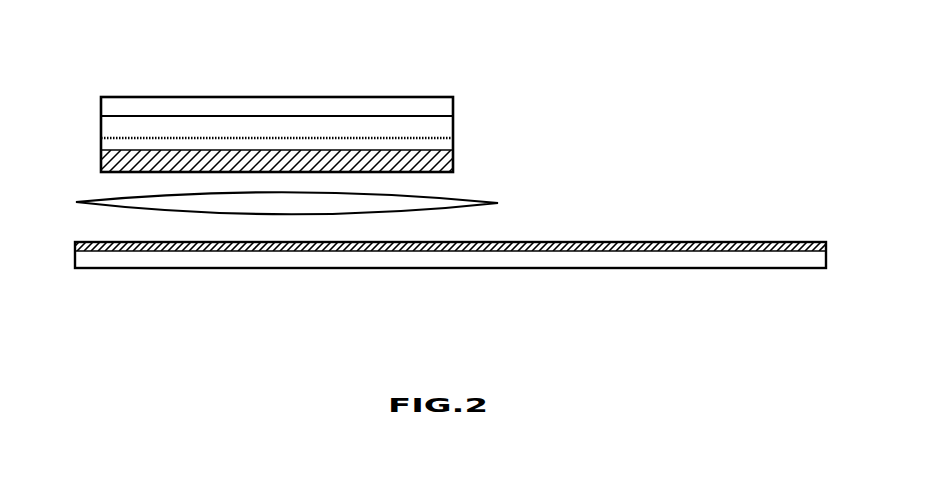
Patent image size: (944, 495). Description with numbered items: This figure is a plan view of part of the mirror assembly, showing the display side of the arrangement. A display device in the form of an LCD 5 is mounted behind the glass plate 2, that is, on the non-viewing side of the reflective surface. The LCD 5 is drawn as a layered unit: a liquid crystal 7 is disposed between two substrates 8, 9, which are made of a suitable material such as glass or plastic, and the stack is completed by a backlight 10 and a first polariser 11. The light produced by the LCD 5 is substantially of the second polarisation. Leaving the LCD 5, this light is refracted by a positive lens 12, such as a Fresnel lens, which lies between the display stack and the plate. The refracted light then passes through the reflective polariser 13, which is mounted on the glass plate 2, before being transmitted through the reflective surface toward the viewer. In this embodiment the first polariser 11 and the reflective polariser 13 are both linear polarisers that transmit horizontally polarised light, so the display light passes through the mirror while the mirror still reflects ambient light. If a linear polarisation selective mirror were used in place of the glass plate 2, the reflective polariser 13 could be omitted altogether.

The glass plate 2 is at (782, 265).
The LCD 5 is at (660, 140).
The liquid crystal 7 is at (97, 137).
The substrate 8 is at (456, 125).
The substrate 9 is at (456, 151).
The backlight 10 is at (362, 97).
The first polariser 11 is at (102, 167).
The positive lens 12 is at (498, 203).
The reflective polariser 13 is at (782, 252).